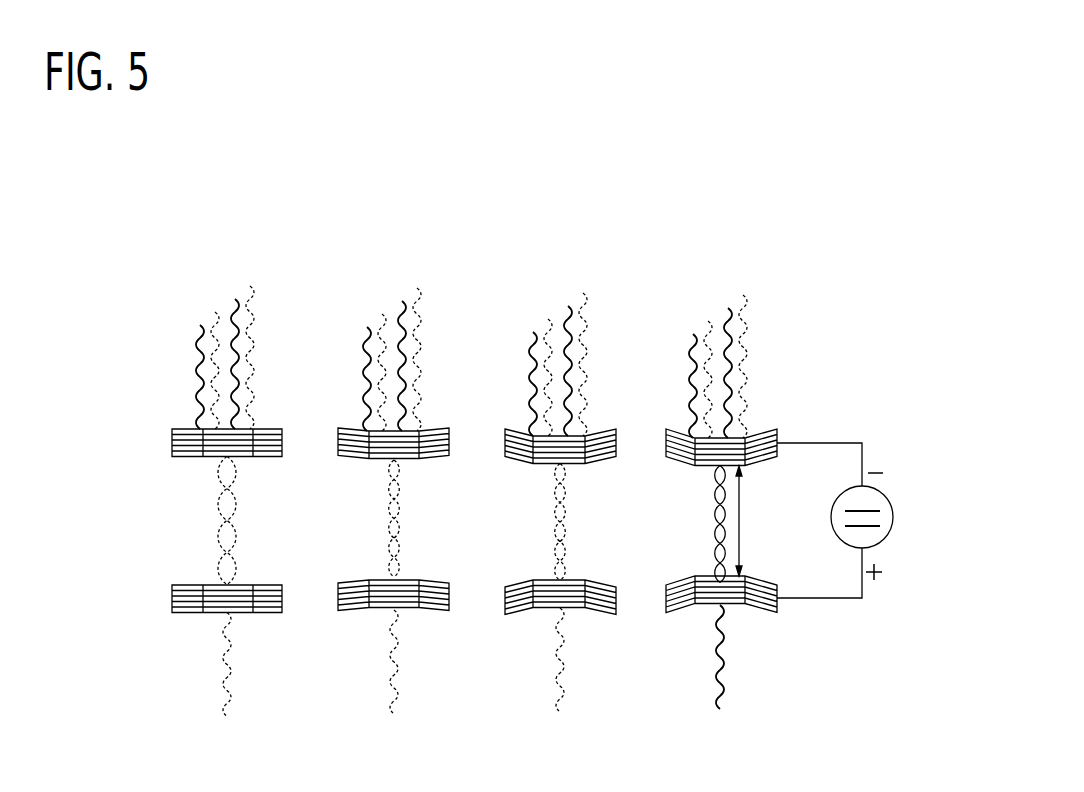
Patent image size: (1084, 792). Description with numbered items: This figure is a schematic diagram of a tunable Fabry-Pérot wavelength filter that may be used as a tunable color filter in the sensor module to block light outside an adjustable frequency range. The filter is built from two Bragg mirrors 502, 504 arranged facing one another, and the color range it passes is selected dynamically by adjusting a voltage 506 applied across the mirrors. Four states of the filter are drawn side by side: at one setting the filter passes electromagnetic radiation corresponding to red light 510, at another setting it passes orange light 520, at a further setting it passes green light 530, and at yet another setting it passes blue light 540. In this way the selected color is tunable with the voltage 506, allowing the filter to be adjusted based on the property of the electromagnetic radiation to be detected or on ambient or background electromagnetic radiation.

The Bragg mirror 502 is at (163, 440).
The Bragg mirror 504 is at (163, 596).
The voltage 506 is at (893, 517).
The red light 510 is at (163, 458).
The orange light 520 is at (378, 456).
The green light 530 is at (545, 455).
The blue light 540 is at (719, 454).